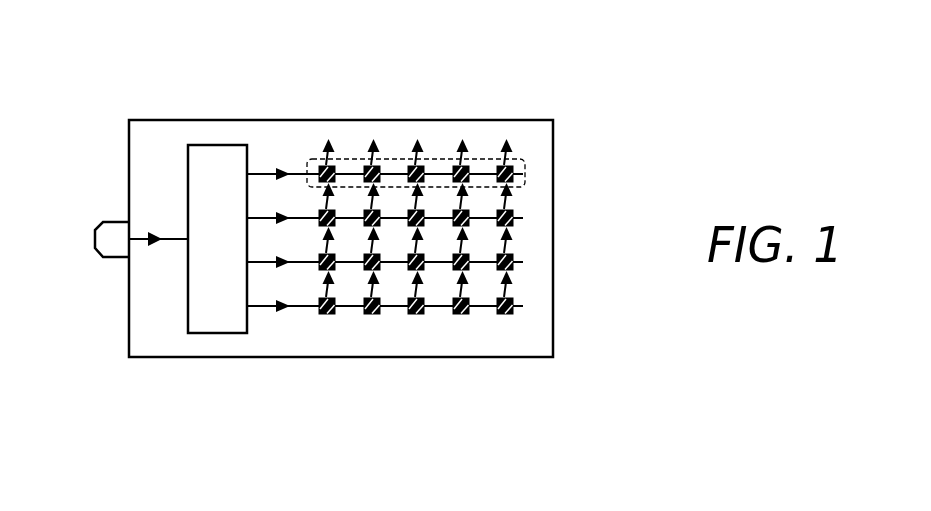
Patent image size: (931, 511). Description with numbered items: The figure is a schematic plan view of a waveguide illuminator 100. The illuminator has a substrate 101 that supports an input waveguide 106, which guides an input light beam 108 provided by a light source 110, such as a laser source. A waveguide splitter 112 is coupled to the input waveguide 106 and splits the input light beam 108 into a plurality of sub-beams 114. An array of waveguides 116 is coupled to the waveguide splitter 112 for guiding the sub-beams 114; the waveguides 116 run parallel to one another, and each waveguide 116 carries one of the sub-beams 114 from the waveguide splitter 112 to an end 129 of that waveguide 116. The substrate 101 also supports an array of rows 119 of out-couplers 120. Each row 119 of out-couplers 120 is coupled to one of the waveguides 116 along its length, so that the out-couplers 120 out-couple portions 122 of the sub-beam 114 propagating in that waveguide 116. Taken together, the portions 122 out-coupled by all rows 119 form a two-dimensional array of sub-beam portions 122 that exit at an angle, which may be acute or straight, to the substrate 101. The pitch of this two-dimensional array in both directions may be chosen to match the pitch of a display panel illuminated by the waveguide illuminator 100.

The waveguide illuminator 100 is at (201, 62).
The substrate 101 is at (143, 159).
The input waveguide 106 is at (173, 239).
The input light beam 108 is at (140, 240).
The light source 110 is at (103, 242).
The waveguide splitter 112 is at (238, 247).
The sub-beams 114 is at (258, 307).
The waveguides 116 is at (303, 165).
The rows of out-couplers 119 is at (525, 166).
The out-couplers 120 is at (370, 315).
The sub-beam portions 122 is at (415, 138).
The end of the waveguide 129 is at (538, 218).